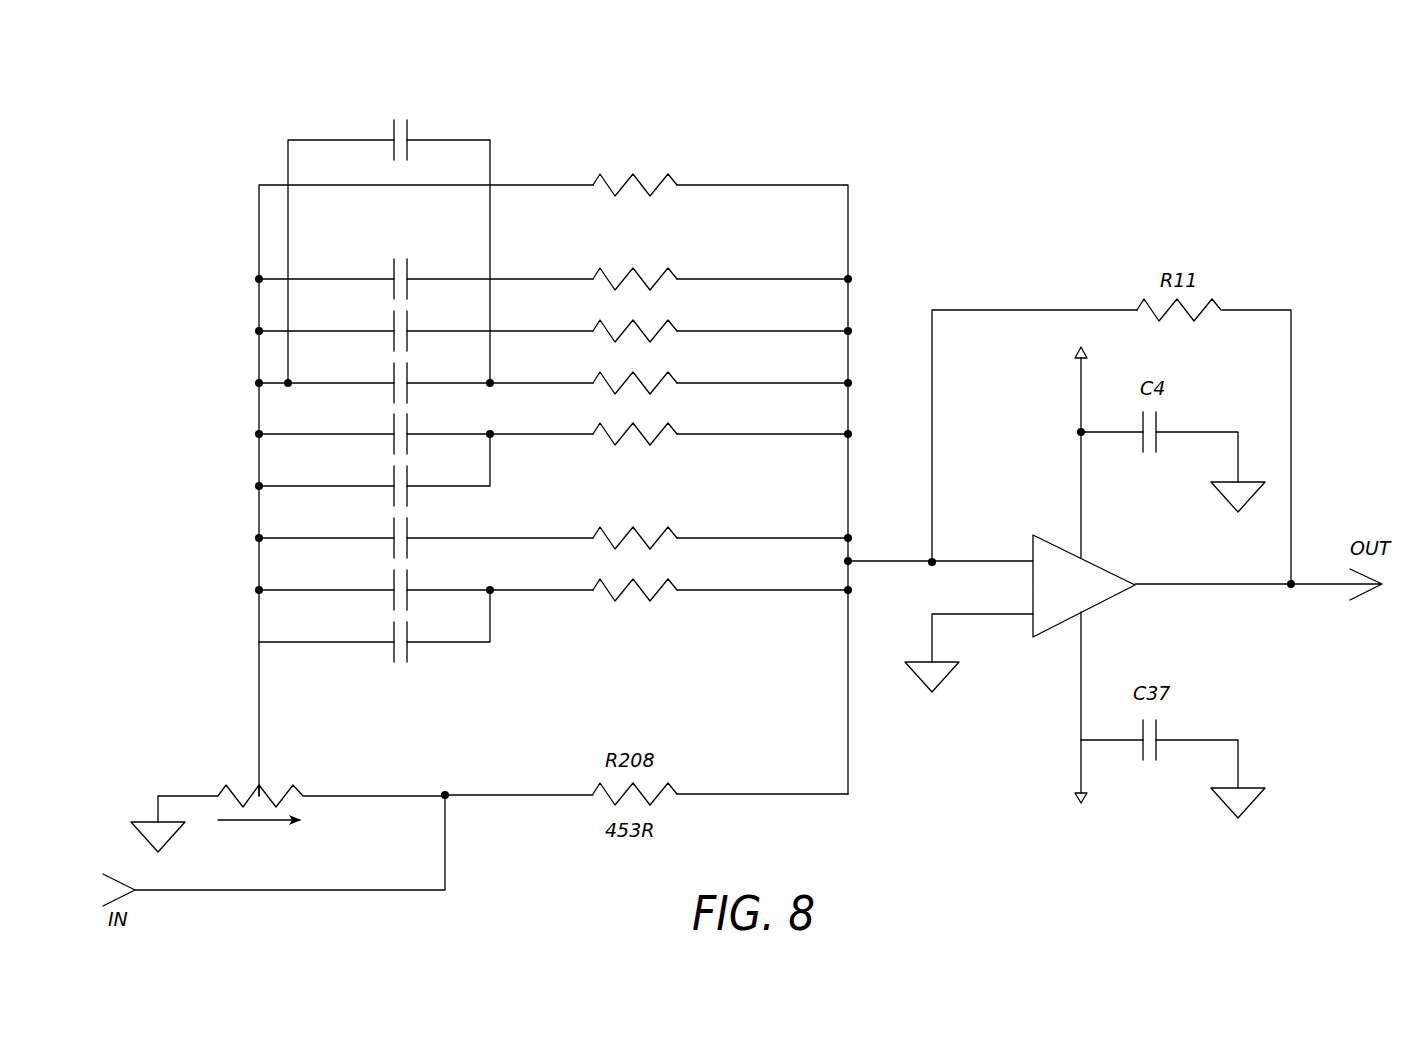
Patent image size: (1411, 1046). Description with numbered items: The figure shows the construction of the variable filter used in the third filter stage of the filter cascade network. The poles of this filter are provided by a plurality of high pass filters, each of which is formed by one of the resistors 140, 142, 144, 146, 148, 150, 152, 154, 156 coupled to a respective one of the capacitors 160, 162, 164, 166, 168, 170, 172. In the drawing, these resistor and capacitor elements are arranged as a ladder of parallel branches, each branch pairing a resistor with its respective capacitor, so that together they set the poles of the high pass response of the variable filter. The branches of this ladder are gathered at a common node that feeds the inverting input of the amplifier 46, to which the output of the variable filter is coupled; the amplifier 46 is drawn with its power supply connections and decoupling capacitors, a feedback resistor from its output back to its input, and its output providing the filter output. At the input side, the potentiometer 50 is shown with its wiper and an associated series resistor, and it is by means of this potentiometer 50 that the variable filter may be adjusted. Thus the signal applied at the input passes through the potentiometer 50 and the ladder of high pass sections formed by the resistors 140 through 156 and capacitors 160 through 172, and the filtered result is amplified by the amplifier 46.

The resistor 140 is at (420, 127).
The resistor 142 is at (385, 293).
The resistor 144 is at (385, 345).
The resistor 146 is at (385, 397).
The resistor 148 is at (385, 448).
The resistor 150 is at (385, 500).
The resistor 152 is at (385, 552).
The resistor 154 is at (385, 604).
The resistor 156 is at (382, 660).
The capacitor 160 is at (655, 172).
The capacitor 162 is at (655, 267).
The capacitor 164 is at (655, 320).
The capacitor 166 is at (655, 372).
The capacitor 168 is at (655, 422).
The capacitor 170 is at (655, 526).
The capacitor 172 is at (655, 578).
The amplifier 46 is at (1112, 612).
The potentiometer 50 is at (292, 840).